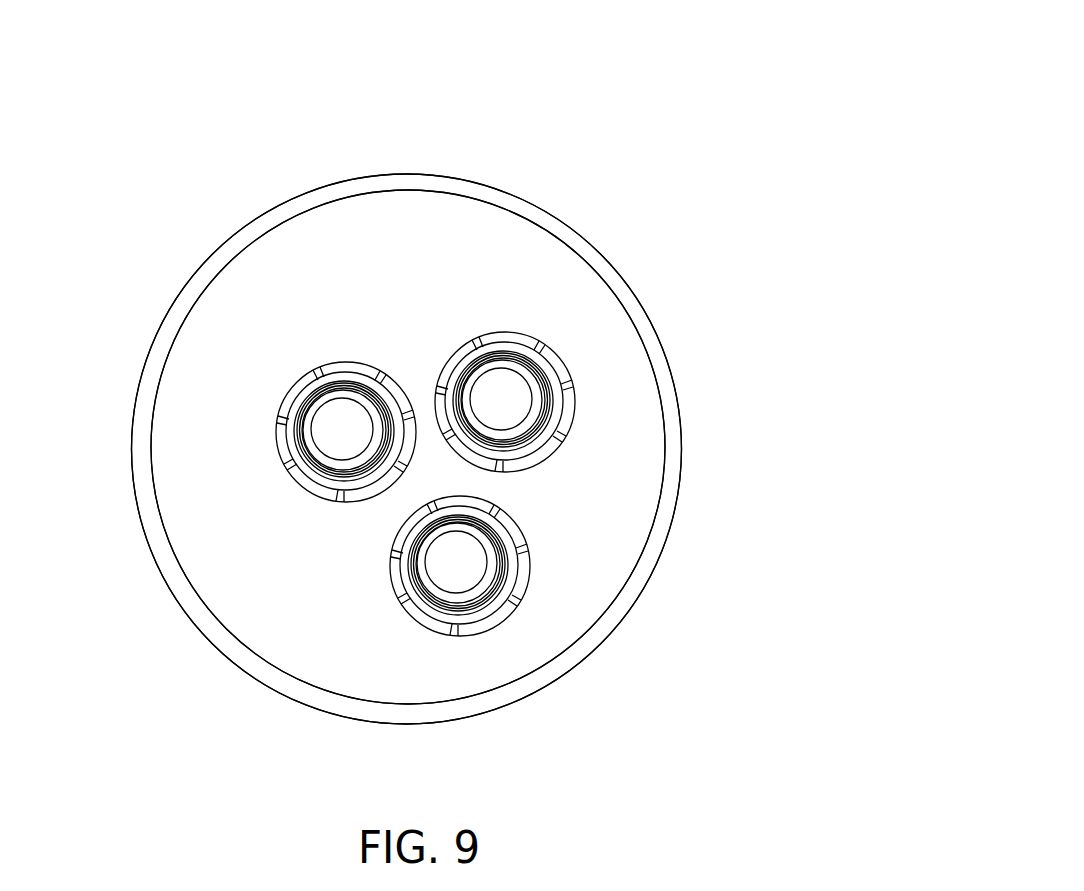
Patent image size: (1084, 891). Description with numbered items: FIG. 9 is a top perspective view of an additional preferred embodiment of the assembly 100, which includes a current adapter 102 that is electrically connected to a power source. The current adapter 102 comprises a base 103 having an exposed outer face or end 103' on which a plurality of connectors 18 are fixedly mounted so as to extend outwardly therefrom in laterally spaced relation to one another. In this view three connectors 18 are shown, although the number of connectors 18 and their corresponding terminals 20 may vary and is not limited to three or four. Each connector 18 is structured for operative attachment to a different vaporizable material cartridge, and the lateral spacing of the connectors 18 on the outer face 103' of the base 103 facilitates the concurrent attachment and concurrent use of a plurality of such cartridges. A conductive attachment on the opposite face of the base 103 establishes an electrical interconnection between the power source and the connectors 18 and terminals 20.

The assembly 100 is at (540, 187).
The current adapter 102 is at (610, 242).
The base 103 is at (487, 447).
The outer face or end 103' is at (356, 447).
The connector 18 is at (270, 408).
The terminal 20 is at (330, 436).